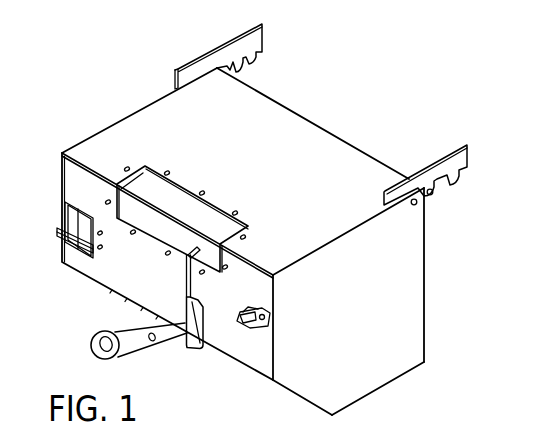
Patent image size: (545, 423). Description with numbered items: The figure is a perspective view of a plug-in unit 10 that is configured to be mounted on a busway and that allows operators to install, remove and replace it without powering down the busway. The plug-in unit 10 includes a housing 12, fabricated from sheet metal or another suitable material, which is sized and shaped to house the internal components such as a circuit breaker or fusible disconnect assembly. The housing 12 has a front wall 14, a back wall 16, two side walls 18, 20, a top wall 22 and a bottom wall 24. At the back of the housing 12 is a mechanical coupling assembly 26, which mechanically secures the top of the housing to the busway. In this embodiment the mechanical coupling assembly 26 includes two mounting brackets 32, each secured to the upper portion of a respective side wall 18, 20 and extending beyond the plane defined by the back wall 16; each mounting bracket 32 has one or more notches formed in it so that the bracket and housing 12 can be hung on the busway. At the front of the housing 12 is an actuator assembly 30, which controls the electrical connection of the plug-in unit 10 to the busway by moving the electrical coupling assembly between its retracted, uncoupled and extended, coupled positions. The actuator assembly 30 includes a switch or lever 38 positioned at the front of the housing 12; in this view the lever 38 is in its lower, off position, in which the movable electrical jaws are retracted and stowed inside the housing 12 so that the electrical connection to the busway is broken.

The plug-in unit 10 is at (376, 93).
The housing 12 is at (80, 122).
The front wall 14 is at (120, 258).
The back wall 16 is at (287, 103).
The side wall 18 is at (145, 107).
The side wall 20 is at (364, 309).
The top wall 22 is at (325, 187).
The bottom wall 24 is at (387, 385).
The mechanical coupling assembly 26 is at (289, 51).
The actuator assembly 30 is at (80, 347).
The mounting bracket 32 is at (233, 57).
The lever 38 is at (167, 340).